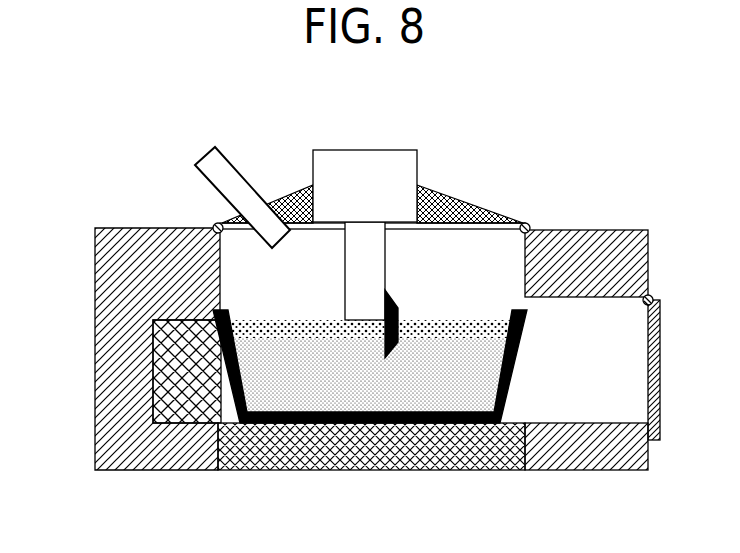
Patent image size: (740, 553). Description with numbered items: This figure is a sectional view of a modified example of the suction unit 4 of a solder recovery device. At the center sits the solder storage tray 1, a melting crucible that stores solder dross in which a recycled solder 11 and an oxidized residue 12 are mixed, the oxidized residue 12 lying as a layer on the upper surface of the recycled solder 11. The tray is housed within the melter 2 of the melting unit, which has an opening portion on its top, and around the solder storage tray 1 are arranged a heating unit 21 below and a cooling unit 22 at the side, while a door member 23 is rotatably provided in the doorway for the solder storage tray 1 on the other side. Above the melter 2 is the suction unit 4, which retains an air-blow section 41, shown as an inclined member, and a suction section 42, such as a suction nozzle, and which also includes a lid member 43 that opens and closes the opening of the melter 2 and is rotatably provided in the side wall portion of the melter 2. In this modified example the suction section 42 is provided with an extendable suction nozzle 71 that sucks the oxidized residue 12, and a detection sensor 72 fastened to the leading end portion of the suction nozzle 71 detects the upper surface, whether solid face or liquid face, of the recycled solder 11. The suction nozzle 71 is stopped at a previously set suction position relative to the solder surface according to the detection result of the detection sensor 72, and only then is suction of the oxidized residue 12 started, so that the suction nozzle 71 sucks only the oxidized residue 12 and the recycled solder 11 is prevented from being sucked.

The solder storage tray 1 is at (398, 366).
The melter 2 is at (368, 380).
The suction unit 4 is at (351, 228).
The recycled solder 11 is at (482, 403).
The oxidized residue 12 is at (515, 328).
The heating unit 21 is at (303, 474).
The cooling unit 22 is at (172, 370).
The door member 23 is at (662, 352).
The air-blow section 41 is at (208, 150).
The suction section 42 is at (360, 149).
The lid member 43 is at (290, 192).
The suction nozzle 71 is at (345, 278).
The detection sensor 72 is at (400, 305).